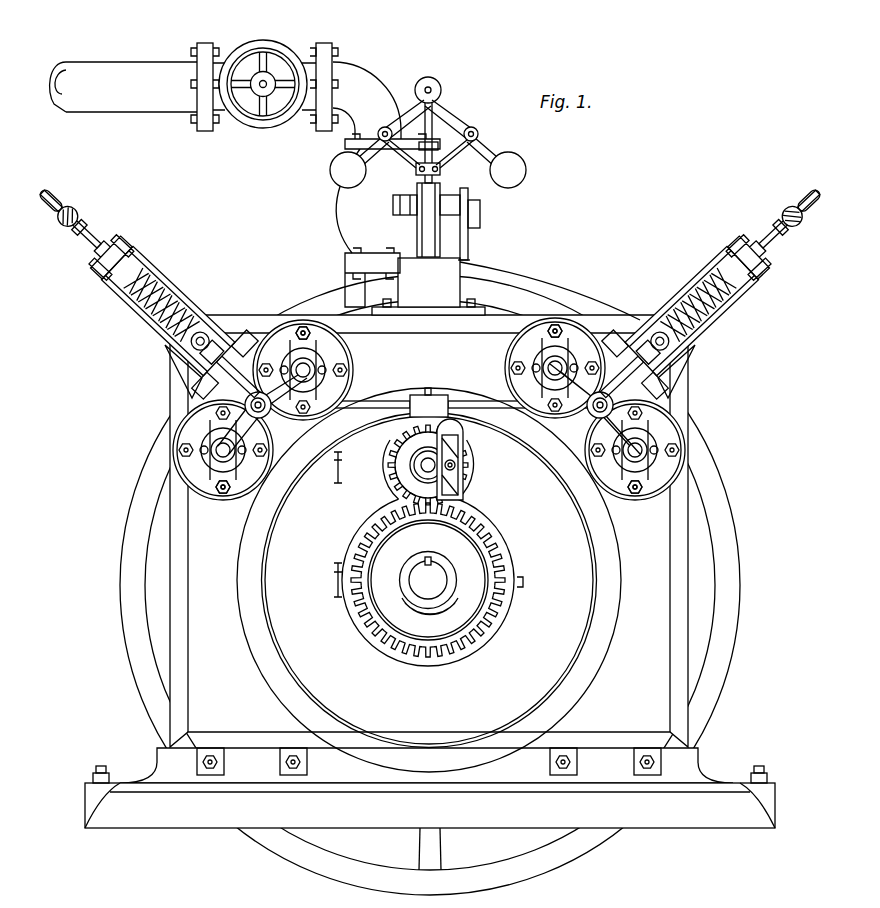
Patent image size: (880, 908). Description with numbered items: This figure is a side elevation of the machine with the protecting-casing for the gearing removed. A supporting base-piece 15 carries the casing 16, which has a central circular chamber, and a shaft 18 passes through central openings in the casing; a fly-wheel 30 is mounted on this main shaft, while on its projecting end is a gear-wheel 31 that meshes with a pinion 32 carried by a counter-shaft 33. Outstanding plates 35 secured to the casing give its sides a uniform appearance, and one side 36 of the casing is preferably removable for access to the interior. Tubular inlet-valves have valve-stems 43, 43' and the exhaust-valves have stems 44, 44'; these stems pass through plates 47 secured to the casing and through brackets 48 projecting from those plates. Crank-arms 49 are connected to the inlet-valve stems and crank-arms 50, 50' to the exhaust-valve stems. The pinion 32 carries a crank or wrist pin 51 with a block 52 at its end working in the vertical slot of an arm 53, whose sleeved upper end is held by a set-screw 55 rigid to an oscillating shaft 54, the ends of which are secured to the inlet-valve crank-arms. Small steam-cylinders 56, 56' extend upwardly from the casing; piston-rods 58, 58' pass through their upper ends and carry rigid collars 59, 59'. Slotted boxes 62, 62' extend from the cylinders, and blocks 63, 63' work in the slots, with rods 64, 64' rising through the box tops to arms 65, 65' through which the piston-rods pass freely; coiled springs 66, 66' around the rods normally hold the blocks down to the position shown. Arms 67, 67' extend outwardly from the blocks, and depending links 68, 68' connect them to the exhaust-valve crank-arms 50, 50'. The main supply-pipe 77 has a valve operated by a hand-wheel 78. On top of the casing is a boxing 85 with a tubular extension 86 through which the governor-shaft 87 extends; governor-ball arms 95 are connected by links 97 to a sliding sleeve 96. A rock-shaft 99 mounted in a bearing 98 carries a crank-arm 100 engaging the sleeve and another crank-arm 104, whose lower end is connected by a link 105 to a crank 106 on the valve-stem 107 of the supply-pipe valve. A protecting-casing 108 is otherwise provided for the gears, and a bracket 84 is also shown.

The supporting base-piece 15 is at (683, 832).
The casing 16 is at (680, 638).
The shaft 18 is at (420, 590).
The fly-wheel 30 is at (122, 600).
The gear-wheel 31 is at (455, 650).
The pinion 32 is at (426, 466).
The counter-shaft 33 is at (378, 470).
The outstanding plates 35 is at (604, 650).
The removable side of casing 36 is at (700, 720).
The inlet-valve stem 43 is at (343, 391).
The inlet-valve stem 43' is at (555, 337).
The exhaust-valve stem 44 is at (508, 382).
The exhaust-valve stem 44' is at (674, 450).
The plates 47 is at (350, 355).
The brackets 48 is at (220, 455).
The crank-arm 49 is at (262, 418).
The crank-arm 50 is at (487, 371).
The crank-arm 50' is at (672, 427).
The crank or wrist pin 51 is at (460, 468).
The block 52 is at (462, 482).
The arm 53 is at (464, 446).
The oscillating shaft 54 is at (368, 400).
The set-screw 55 is at (430, 388).
The steam-cylinder 56 is at (451, 306).
The steam-cylinder 56' is at (713, 310).
The piston-rod 58 is at (433, 196).
The piston-rod 58' is at (809, 204).
The rigid collar 59 is at (433, 219).
The rigid collar 59' is at (792, 219).
The slotted box 62 is at (432, 351).
The slotted box 62' is at (710, 344).
The block 63 is at (417, 367).
The block 63' is at (684, 356).
The rod 64 is at (428, 283).
The rod 64' is at (763, 283).
The arm 65 is at (418, 211).
The arm 65' is at (785, 203).
The coiled spring 66 is at (403, 272).
The coiled spring 66' is at (700, 272).
The arm 67 is at (417, 378).
The arm 67' is at (667, 366).
The link 68 is at (379, 362).
The link 68' is at (633, 338).
The main supply-pipe 77 is at (126, 66).
The hand-wheel 78 is at (270, 48).
The bracket 84 is at (170, 395).
The boxing 85 is at (428, 286).
The tubular extension 86 is at (348, 238).
The governor-shaft 87 is at (437, 112).
The governor-ball arms 95 is at (405, 122).
The sliding sleeve 96 is at (333, 178).
The links 97 is at (470, 128).
The bearing 98 is at (444, 190).
The rock-shaft 99 is at (393, 205).
The crank-arm 100 is at (420, 220).
The crank-arm 104 is at (470, 243).
The link 105 is at (465, 270).
The crank 106 is at (480, 254).
The valve-stem 107 is at (480, 206).
The protecting-casing 108 is at (500, 627).